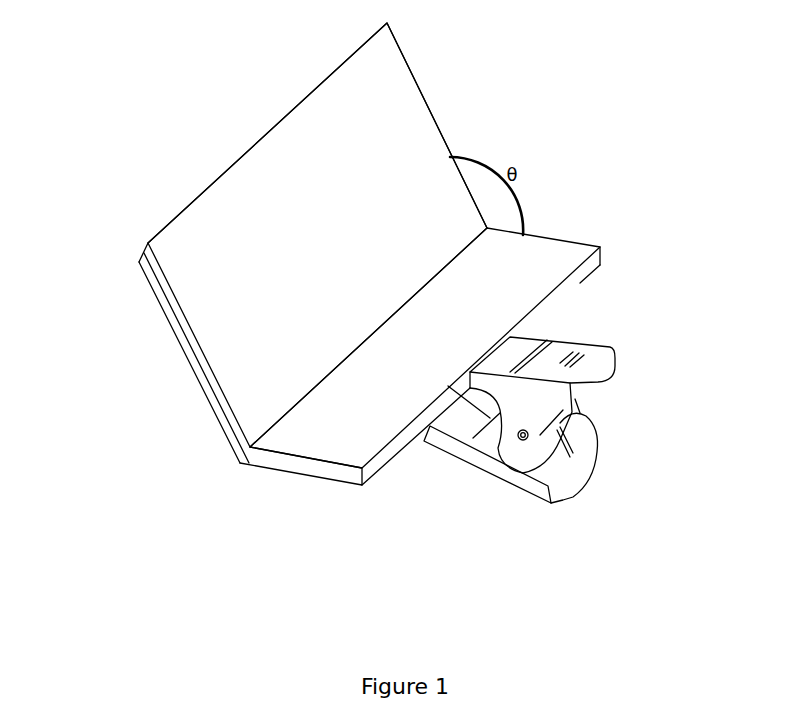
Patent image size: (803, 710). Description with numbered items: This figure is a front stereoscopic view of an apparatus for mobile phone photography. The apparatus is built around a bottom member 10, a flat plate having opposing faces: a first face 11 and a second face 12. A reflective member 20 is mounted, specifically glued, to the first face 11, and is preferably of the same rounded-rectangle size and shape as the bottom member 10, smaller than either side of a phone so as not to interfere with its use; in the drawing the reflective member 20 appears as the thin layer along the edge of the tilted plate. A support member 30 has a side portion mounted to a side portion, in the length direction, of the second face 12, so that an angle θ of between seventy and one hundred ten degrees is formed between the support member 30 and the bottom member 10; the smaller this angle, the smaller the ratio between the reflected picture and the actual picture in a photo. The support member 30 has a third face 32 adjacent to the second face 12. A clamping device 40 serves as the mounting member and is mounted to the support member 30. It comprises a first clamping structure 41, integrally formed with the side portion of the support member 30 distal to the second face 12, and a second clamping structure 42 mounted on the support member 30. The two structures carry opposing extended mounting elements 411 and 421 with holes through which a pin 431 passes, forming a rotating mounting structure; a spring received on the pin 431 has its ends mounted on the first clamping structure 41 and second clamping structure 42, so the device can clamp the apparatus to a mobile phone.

The bottom member 10 is at (434, 117).
The first face 11 is at (148, 280).
The second face 12 is at (243, 198).
The reflective member 20 is at (168, 320).
The support member 30 is at (543, 237).
The third face 32 is at (347, 430).
The clamping device 40 is at (571, 435).
The first clamping structure 41 is at (568, 342).
The mounting element 411 is at (552, 409).
The second clamping structure 42 is at (502, 465).
The mounting element 421 is at (563, 493).
The pin 431 is at (523, 441).